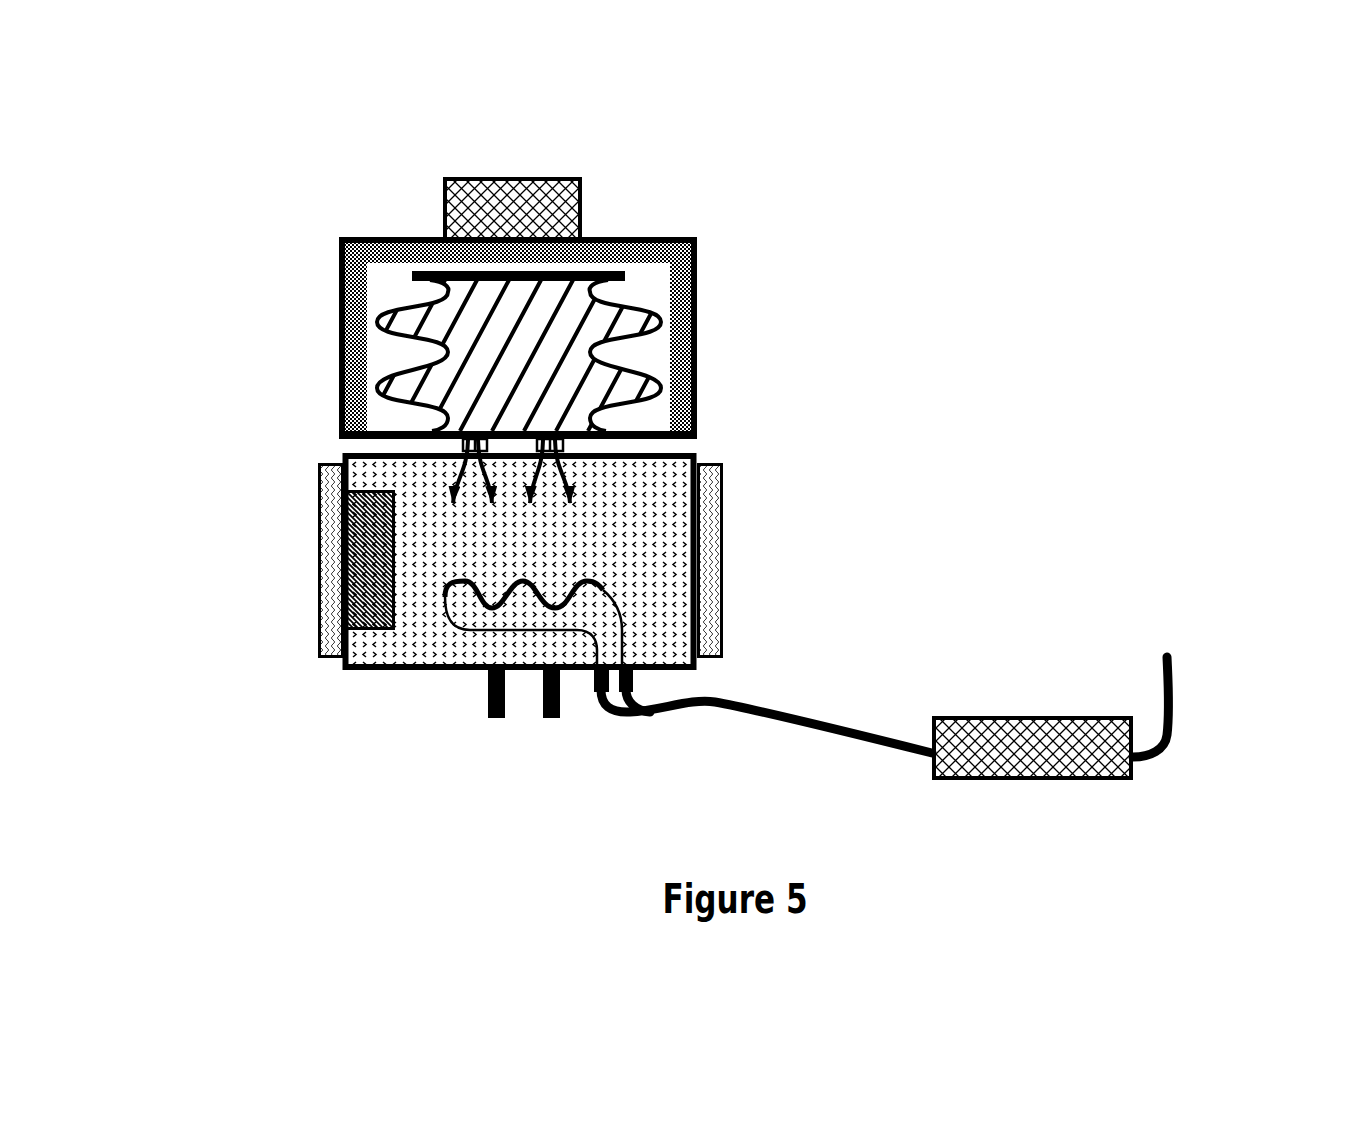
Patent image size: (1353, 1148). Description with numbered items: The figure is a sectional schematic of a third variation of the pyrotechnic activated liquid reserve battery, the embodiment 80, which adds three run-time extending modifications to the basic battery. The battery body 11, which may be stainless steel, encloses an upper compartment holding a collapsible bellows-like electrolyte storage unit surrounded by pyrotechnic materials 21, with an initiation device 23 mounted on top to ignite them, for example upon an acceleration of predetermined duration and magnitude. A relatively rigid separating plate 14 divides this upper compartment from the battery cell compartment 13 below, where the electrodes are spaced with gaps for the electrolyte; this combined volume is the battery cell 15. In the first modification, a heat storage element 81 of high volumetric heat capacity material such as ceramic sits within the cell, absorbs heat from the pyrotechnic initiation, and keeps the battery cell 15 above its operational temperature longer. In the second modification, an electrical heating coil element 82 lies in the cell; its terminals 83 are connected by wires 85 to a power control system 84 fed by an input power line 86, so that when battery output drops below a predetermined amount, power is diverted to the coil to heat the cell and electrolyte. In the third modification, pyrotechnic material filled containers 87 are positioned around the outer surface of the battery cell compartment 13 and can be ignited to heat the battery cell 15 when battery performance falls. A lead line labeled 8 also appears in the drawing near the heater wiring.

The liquid reserve battery embodiment 80 is at (933, 203).
The initiation device 23 is at (520, 203).
The battery body 11 is at (335, 392).
The pyrotechnic materials 21 is at (393, 270).
The separating plate 14 is at (395, 442).
The battery cell compartment 13 is at (795, 465).
The battery cell 15 is at (645, 527).
The pyrotechnic material filled container 87 is at (735, 480).
The heat storage element 81 is at (368, 633).
The electrical heating coil element 82 is at (523, 593).
The heater 8 is at (458, 628).
The terminals of heating coil element 83 is at (595, 718).
The wires 85 is at (833, 715).
The power control system 84 is at (1023, 705).
The input power line 86 is at (1177, 673).